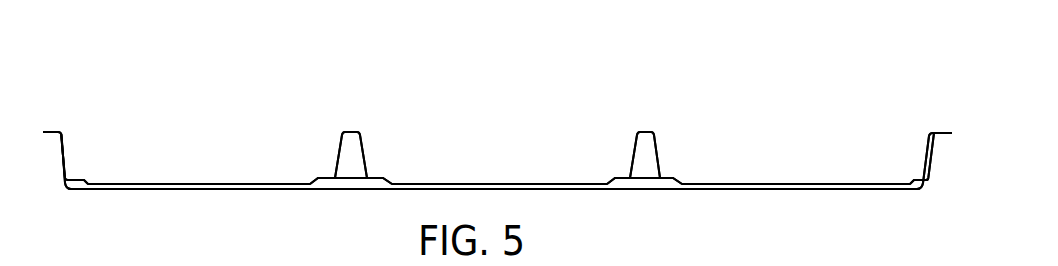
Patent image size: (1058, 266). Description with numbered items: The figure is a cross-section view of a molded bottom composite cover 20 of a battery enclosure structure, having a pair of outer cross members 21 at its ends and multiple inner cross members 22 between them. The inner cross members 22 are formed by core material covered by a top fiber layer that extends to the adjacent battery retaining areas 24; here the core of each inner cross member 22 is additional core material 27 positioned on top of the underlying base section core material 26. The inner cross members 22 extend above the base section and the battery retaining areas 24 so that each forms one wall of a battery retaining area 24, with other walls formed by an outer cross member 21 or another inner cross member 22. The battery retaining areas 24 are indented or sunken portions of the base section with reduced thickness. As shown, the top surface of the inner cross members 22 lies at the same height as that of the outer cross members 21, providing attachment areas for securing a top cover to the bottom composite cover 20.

The bottom composite cover 20 is at (752, 83).
The outer cross member 21 is at (68, 150).
The inner cross member 22 is at (352, 130).
The battery retaining area 24 is at (188, 183).
The base section core material 26 is at (345, 186).
The additional core material 27 is at (337, 177).